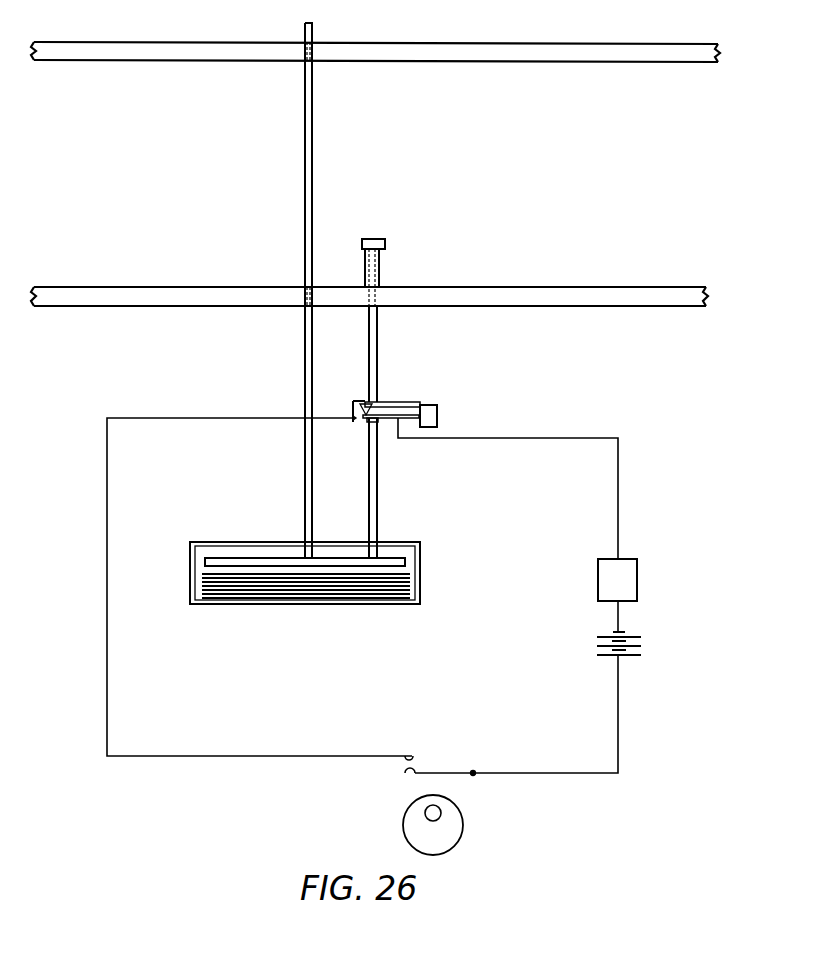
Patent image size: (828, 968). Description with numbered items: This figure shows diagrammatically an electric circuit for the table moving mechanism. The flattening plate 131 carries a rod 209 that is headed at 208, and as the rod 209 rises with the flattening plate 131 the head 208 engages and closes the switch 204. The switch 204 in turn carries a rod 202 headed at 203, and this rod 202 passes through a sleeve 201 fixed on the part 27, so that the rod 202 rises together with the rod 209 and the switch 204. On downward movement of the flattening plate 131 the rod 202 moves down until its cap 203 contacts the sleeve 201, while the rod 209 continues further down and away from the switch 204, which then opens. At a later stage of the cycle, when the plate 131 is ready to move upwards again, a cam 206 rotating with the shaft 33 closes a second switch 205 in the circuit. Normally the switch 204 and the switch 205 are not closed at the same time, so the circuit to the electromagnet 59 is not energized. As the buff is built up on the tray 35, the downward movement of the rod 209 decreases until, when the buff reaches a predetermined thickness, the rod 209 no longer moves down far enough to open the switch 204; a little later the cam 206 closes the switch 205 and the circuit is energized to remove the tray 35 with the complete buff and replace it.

The frame part 27 is at (598, 275).
The sleeve 201 is at (379, 271).
The rod 202 is at (378, 345).
The head 203 is at (371, 239).
The switch 204 is at (358, 401).
The head 208 is at (365, 421).
The rod 209 is at (378, 497).
The flattening plate 131 is at (262, 558).
The tray 35 is at (190, 573).
The electromagnet 59 is at (632, 580).
The second switch 205 is at (440, 773).
The shaft 33 is at (441, 813).
The cam 206 is at (460, 838).